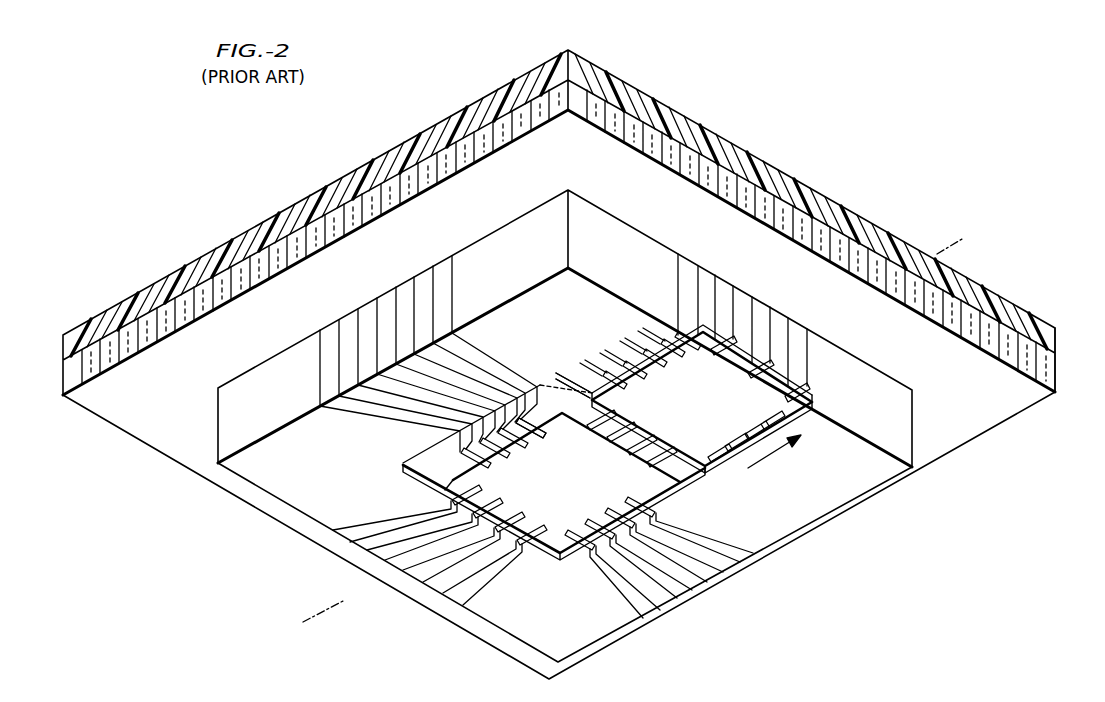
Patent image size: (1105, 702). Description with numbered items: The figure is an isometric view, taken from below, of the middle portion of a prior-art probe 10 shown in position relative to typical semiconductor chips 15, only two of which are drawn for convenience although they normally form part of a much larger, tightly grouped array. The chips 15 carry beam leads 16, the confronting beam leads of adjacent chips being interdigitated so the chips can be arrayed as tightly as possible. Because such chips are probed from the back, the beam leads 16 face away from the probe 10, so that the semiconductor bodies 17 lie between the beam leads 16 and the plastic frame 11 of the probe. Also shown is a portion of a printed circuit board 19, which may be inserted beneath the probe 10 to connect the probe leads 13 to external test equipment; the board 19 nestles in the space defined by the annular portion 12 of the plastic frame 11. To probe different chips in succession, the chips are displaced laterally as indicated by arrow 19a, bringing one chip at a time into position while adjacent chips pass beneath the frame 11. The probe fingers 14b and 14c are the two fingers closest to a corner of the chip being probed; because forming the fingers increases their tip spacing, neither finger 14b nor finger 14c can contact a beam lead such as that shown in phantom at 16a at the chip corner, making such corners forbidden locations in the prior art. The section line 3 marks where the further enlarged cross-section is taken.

The probe 10 is at (230, 226).
The plastic frame 11 is at (345, 186).
The annular portion 12 is at (218, 410).
The probe leads 13 is at (452, 284).
The probe finger 14b is at (528, 412).
The probe finger 14c is at (592, 406).
The semiconductor chips 15 is at (803, 389).
The beam leads 16 is at (662, 457).
The beam lead 16a is at (545, 412).
The semiconductor bodies 17 is at (586, 526).
The printed circuit board 19 is at (1056, 380).
The arrow 19a is at (780, 452).
The section line 3 is at (950, 241).